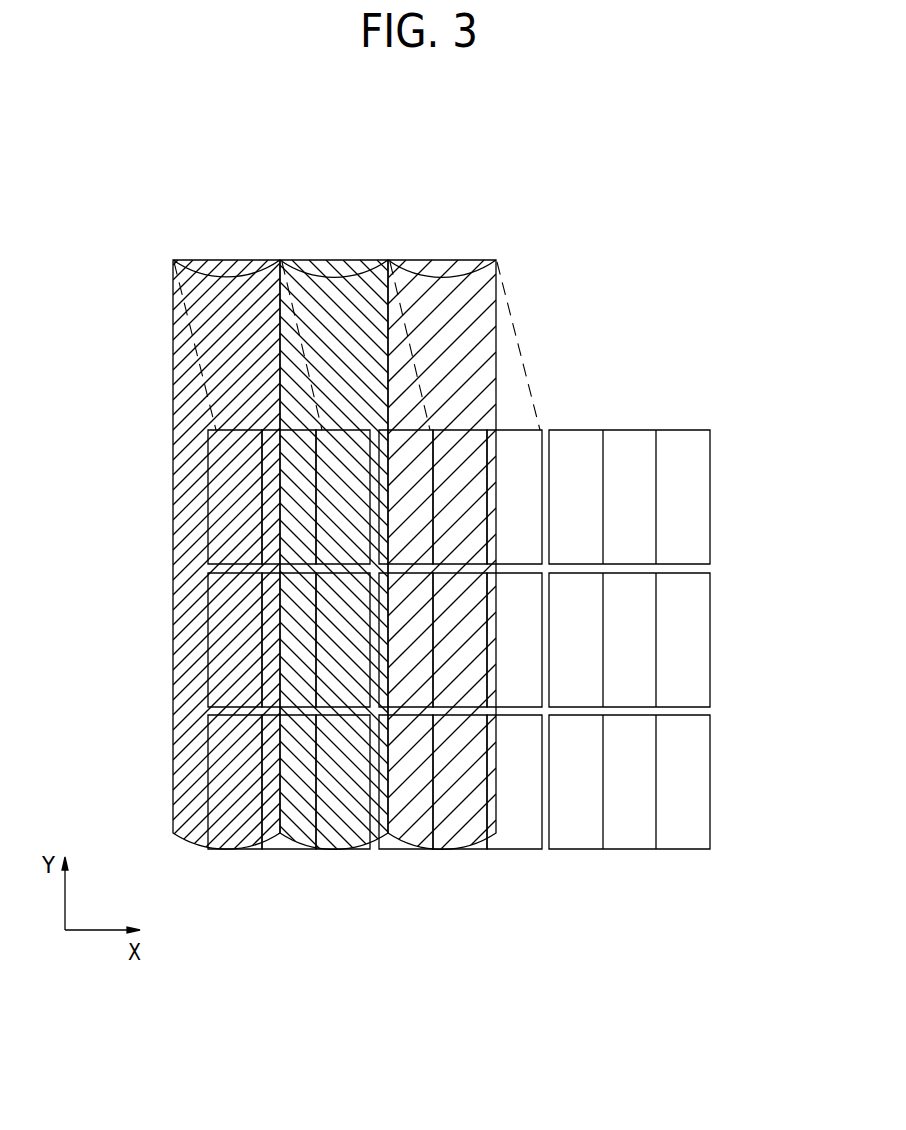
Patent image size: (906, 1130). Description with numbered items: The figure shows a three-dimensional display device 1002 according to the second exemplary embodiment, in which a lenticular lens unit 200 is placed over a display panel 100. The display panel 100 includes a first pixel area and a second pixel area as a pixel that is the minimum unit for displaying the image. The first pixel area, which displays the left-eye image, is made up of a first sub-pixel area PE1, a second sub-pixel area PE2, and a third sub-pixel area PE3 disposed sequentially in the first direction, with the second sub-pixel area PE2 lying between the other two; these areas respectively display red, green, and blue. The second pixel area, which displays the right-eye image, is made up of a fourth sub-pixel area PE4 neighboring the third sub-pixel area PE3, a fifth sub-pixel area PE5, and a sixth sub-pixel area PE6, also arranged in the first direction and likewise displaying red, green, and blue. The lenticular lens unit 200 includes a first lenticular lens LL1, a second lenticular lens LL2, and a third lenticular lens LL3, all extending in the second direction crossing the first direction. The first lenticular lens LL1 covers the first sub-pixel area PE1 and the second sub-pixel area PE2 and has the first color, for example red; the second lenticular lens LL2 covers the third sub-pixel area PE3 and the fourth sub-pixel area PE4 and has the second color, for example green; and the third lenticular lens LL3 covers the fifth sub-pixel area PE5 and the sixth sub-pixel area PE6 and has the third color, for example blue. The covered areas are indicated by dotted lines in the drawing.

The 3D display device 1002 is at (435, 118).
The lenticular lens unit 200 is at (415, 191).
The first lenticular lens LL1 is at (224, 268).
The second lenticular lens LL2 is at (330, 268).
The third lenticular lens LL3 is at (443, 268).
The display panel 100 is at (722, 649).
The first sub-pixel area PE1 is at (236, 842).
The second sub-pixel area PE2 is at (288, 842).
The third sub-pixel area PE3 is at (343, 842).
The fourth sub-pixel area PE4 is at (409, 842).
The fifth sub-pixel area PE5 is at (464, 842).
The sixth sub-pixel area PE6 is at (519, 842).